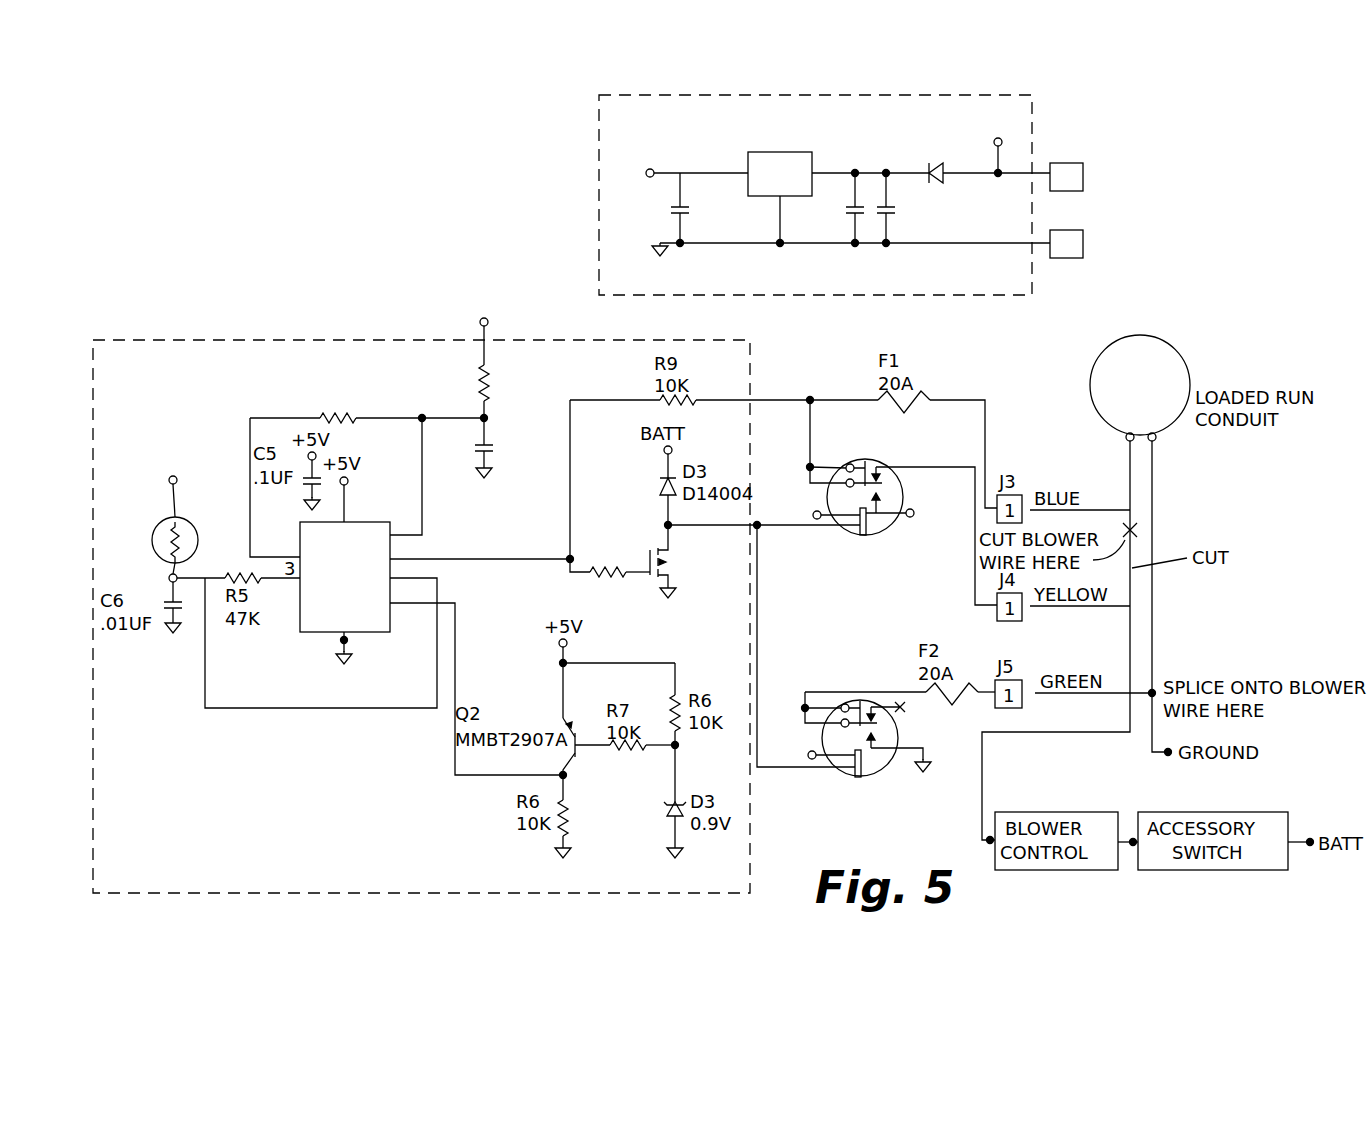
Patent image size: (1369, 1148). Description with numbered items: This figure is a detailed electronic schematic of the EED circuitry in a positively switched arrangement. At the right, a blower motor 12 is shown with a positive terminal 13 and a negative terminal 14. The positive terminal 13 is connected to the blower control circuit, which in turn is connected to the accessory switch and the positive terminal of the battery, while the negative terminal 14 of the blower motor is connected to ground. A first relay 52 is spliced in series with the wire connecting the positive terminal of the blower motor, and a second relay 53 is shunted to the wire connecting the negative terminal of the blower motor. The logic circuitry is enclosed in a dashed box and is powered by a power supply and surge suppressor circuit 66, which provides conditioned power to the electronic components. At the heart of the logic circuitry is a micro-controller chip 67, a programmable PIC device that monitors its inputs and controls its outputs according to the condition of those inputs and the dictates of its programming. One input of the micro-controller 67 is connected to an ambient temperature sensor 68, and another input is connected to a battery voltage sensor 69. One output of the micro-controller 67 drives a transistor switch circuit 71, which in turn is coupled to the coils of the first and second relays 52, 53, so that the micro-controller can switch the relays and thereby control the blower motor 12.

The power supply and surge suppressor circuit 66 is at (594, 141).
The battery voltage sensor 69 is at (468, 358).
The ambient temperature sensor 68 is at (156, 512).
The micro-controller chip 67 is at (292, 634).
The transistor switch circuit 71 is at (650, 537).
The first relay 52 is at (882, 462).
The second relay 53 is at (895, 732).
The blower motor 12 is at (1181, 357).
The positive terminal 13 is at (1126, 444).
The negative terminal 14 is at (1153, 444).